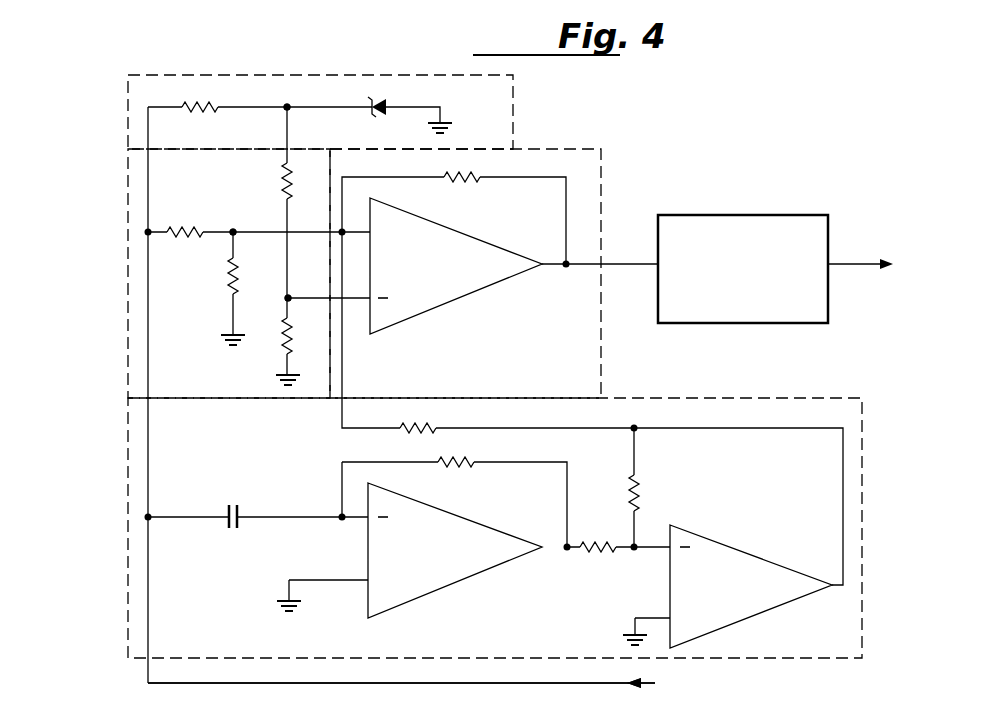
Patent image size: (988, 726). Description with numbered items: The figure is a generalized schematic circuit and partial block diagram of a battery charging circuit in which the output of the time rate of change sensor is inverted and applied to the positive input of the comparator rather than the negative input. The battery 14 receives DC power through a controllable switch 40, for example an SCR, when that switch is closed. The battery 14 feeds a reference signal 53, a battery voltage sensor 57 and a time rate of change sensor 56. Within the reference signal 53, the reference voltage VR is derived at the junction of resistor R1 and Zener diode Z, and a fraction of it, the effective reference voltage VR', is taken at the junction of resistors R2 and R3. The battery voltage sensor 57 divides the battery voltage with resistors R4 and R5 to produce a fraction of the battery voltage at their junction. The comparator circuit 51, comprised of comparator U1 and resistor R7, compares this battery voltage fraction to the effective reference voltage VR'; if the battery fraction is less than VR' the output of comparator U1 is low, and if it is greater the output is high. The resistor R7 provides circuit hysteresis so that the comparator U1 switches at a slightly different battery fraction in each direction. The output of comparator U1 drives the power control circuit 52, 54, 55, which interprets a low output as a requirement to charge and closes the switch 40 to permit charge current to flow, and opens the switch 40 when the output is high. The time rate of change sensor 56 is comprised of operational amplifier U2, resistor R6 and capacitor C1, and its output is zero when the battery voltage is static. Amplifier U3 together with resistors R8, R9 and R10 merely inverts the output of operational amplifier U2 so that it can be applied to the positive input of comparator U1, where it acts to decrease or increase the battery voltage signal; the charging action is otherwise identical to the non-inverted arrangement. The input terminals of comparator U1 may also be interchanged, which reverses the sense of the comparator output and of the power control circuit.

The reference signal 53 is at (516, 113).
The comparator circuit 51 is at (605, 188).
The battery voltage sensor 57 is at (125, 330).
The time rate of change sensor 56 is at (640, 394).
The power control circuit 52 is at (794, 257).
The power control circuit 54 is at (794, 257).
The power control circuit 55 is at (820, 230).
The switching circuit 40 is at (880, 288).
The battery 14 is at (483, 682).
The resistor R1 is at (215, 106).
The resistor R2 is at (284, 176).
The resistor R3 is at (280, 340).
The resistor R4 is at (180, 228).
The resistor R5 is at (229, 274).
The resistor R6 is at (466, 466).
The resistor R7 is at (456, 180).
The resistor R8 is at (598, 554).
The resistor R9 is at (641, 482).
The resistor R10 is at (436, 426).
The Zener diode Z is at (405, 94).
The capacitor C1 is at (241, 512).
The comparator U1 is at (430, 298).
The operational amplifier U2 is at (455, 590).
The amplifier U3 is at (778, 600).
The reference signal voltage VR is at (306, 96).
The effective reference voltage VR' is at (299, 278).